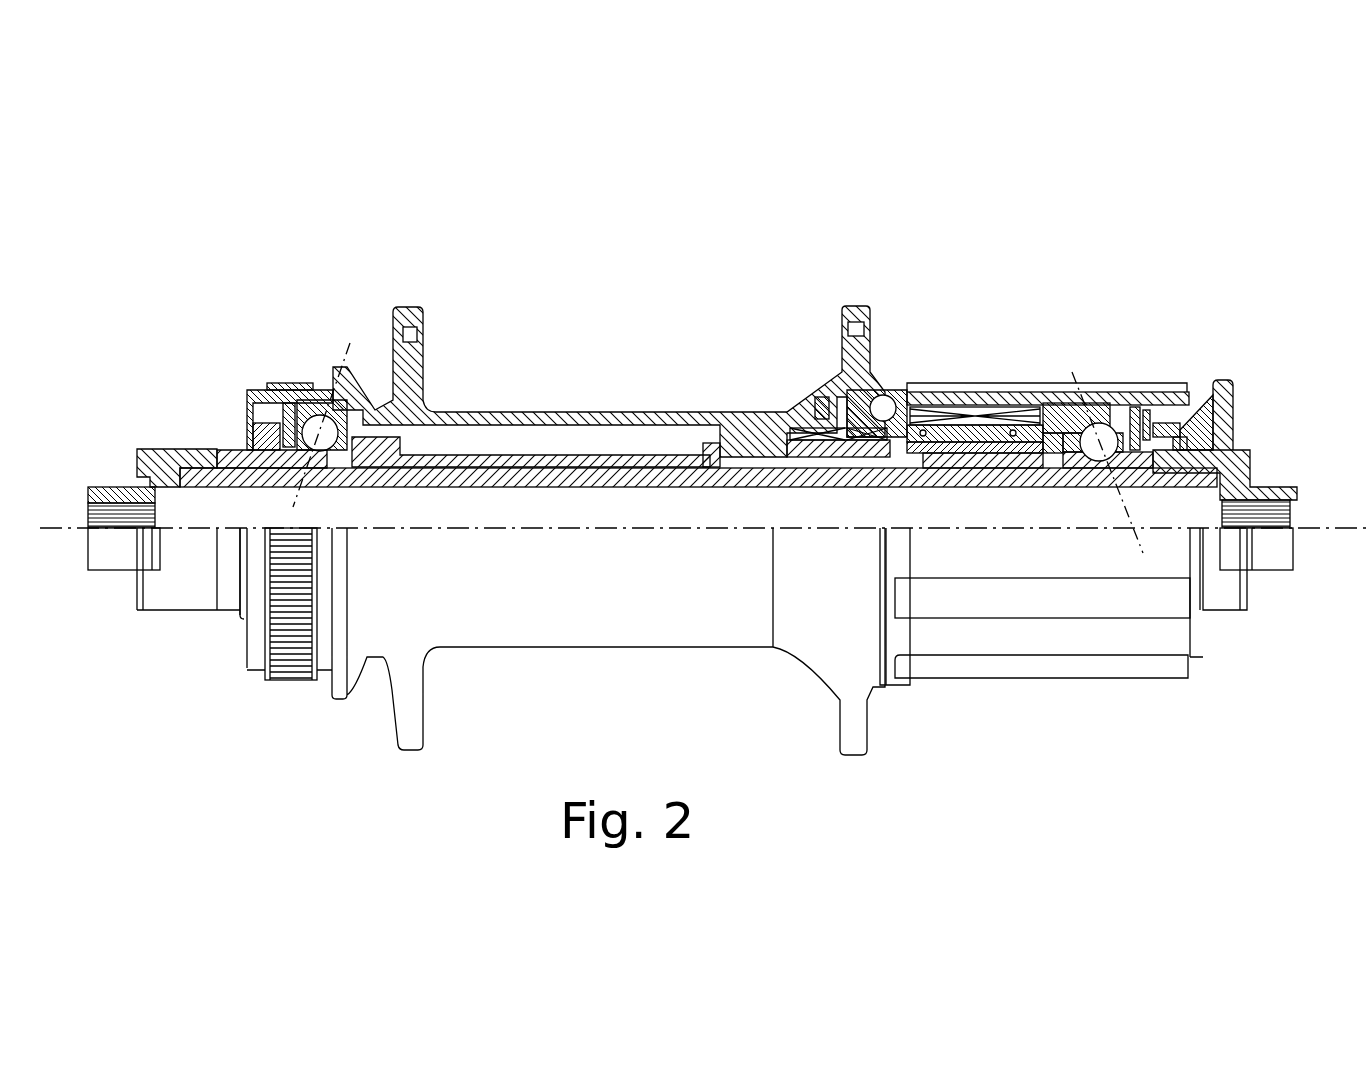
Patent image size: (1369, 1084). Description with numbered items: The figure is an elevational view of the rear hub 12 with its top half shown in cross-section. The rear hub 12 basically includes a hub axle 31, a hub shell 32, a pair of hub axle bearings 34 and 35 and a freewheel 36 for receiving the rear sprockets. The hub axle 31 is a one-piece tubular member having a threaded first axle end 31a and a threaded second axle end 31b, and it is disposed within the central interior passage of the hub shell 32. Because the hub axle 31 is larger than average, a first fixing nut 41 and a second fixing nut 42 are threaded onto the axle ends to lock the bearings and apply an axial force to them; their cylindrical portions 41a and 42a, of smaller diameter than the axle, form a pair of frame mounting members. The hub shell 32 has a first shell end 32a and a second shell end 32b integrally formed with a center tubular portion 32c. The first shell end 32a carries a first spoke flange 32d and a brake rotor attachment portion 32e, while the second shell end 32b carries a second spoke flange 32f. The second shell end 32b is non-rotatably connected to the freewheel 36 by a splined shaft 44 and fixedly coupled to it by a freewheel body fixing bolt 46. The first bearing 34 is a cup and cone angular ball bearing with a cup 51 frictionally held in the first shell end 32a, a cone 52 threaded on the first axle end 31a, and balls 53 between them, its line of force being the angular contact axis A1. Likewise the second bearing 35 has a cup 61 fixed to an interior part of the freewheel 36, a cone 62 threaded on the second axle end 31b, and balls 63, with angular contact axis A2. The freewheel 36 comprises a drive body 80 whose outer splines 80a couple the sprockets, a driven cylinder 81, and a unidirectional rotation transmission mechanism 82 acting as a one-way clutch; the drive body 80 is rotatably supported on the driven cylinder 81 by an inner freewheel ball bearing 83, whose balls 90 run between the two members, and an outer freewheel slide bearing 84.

The rear hub 12 is at (945, 237).
The hub axle 31 is at (633, 466).
The first axle end 31a is at (212, 492).
The second axle end 31b is at (1197, 488).
The hub shell 32 is at (313, 330).
The first shell end 32a is at (313, 364).
The second shell end 32b is at (828, 358).
The center tubular portion 32c is at (560, 408).
The first spoke flange 32d is at (423, 362).
The brake rotor attachment portion 32e is at (282, 381).
The second spoke flange 32f is at (870, 330).
The first hub axle ball bearing 34 is at (246, 416).
The second hub axle ball bearing 35 is at (1136, 400).
The freewheel 36 is at (968, 375).
The first fixing nut 41 is at (146, 445).
The cylindrical portion 41a is at (110, 485).
The second fixing nut 42 is at (1252, 455).
The cylindrical portion 42a is at (1278, 487).
The splined shaft 44 is at (807, 460).
The freewheel body fixing bolt 46 is at (927, 465).
The first outer race or cup 51 is at (342, 400).
The first inner race or cone 52 is at (330, 458).
The first rolling members or balls 53 is at (365, 436).
The second outer race or cup 61 is at (1128, 390).
The second inner race or cone 62 is at (1112, 452).
The second rolling members or balls 63 is at (1063, 458).
The drive body 80 is at (1040, 385).
The axially extending splines 80a is at (1010, 618).
The driven cylinder 81 is at (962, 428).
The unidirectional rotation transmission mechanism 82 is at (1000, 446).
The inner freewheel ball bearing 83 is at (898, 378).
The outer freewheel slide bearing 84 is at (1053, 395).
The balls 90 is at (887, 405).
The angular contact axis A1 is at (292, 506).
The angular contact axis A2 is at (1120, 512).